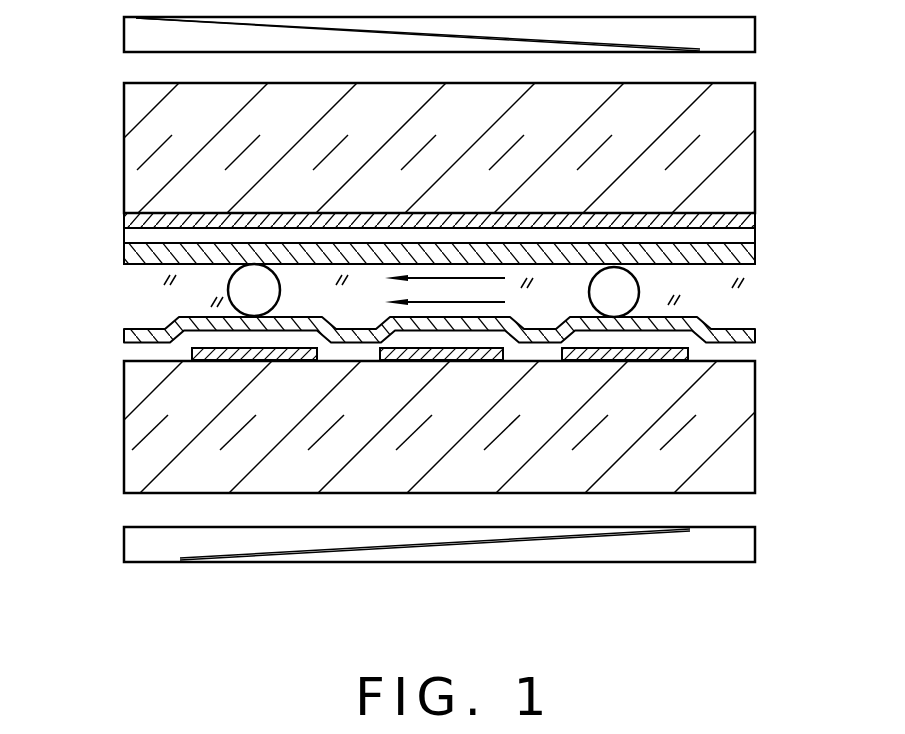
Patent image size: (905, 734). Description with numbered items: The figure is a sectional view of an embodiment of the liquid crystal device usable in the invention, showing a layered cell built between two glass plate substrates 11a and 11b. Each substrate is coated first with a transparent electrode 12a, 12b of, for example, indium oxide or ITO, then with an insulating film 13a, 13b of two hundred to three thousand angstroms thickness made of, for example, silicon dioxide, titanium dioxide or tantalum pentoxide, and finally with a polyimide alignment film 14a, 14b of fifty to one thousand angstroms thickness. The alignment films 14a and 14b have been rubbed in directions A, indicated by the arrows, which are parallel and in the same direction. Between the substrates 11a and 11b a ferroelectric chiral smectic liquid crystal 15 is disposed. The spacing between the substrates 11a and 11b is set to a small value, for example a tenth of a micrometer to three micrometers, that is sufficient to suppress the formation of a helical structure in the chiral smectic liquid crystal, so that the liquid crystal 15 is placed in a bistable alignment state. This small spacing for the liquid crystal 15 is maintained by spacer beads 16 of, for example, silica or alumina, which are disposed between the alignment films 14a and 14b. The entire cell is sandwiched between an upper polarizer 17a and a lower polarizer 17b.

The substrate 11a is at (757, 158).
The substrate 11b is at (757, 442).
The transparent electrode 12a is at (757, 218).
The transparent electrode 12b is at (192, 353).
The insulating film 13a is at (757, 241).
The insulating film 13b is at (757, 357).
The alignment film 14a is at (757, 256).
The alignment film 14b is at (757, 337).
The ferroelectric chiral smectic liquid crystal 15 is at (757, 309).
The spacer beads 16 is at (228, 289).
The polarizer 17a is at (133, 36).
The polarizer 17b is at (133, 541).